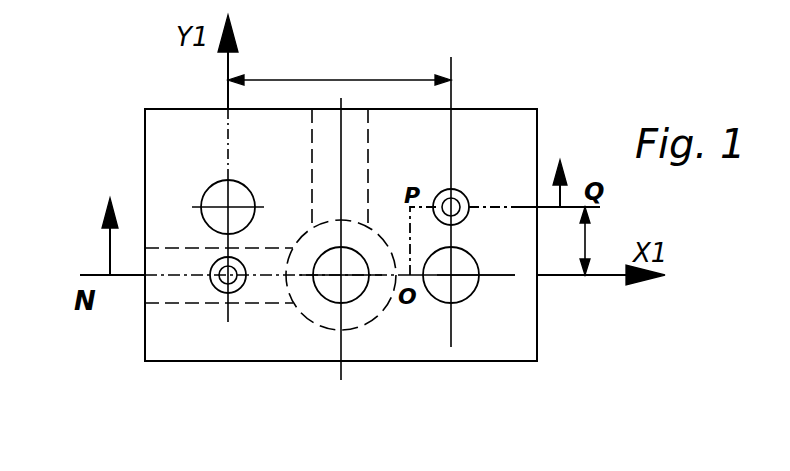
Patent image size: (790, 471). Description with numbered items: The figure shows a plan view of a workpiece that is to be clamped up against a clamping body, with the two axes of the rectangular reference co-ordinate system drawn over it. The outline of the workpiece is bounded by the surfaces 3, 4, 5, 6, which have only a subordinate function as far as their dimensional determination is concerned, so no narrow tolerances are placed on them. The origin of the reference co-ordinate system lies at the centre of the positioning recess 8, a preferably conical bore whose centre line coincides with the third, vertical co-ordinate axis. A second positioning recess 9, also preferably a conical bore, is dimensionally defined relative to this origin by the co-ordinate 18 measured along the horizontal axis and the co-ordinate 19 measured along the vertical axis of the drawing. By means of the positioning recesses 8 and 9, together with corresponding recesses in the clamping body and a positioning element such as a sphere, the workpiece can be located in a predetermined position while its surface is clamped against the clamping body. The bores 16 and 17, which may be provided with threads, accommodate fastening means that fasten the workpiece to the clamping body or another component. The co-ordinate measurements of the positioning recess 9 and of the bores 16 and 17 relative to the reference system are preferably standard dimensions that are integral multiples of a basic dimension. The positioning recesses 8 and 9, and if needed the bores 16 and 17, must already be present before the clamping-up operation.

The surface 3 is at (145, 145).
The surface 4 is at (262, 362).
The surface 5 is at (537, 328).
The surface 6 is at (473, 110).
The positioning recess 8 is at (224, 288).
The positioning recess 9 is at (462, 192).
The bore 16 is at (214, 196).
The bore 17 is at (470, 294).
The co-ordinate 18 is at (296, 80).
The co-ordinate 19 is at (585, 248).